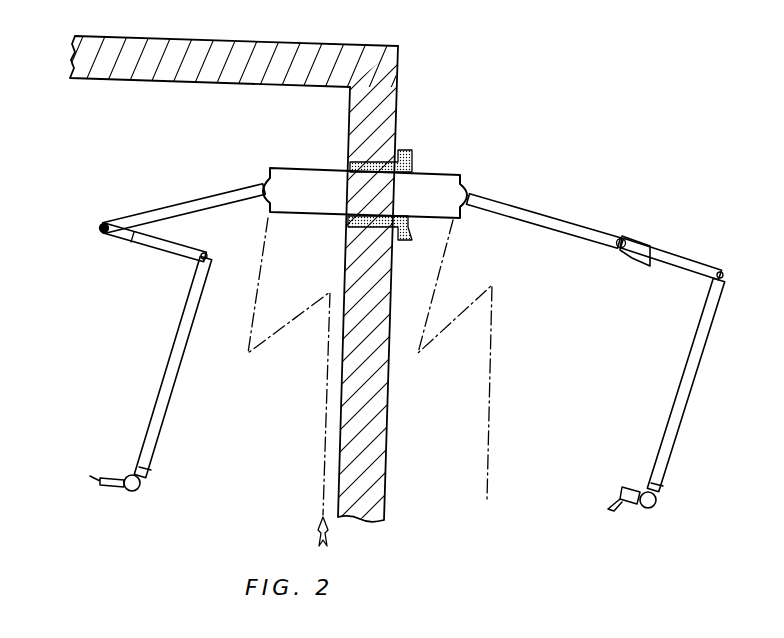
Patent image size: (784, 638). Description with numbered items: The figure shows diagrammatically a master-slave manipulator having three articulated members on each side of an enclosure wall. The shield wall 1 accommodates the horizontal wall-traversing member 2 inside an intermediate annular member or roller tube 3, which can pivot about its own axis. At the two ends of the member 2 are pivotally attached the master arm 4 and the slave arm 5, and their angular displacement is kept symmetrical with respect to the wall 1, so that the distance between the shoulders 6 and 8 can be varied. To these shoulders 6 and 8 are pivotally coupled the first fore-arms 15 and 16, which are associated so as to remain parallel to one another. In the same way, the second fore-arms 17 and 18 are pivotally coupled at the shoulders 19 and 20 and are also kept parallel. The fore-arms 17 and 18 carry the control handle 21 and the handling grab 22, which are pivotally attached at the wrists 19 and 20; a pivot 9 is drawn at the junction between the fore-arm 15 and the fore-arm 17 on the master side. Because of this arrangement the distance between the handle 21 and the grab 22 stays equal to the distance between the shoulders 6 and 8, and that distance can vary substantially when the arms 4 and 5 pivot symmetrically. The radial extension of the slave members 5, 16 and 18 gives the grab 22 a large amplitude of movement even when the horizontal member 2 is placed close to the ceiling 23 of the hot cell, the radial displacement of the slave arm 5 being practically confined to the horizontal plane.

The shield wall 1 is at (394, 104).
The horizontal wall-traversing member 2 is at (440, 180).
The intermediate annular member or roller tube 3 is at (407, 158).
The master arm 4 is at (530, 214).
The slave arm 5 is at (212, 207).
The shoulder 6 is at (626, 240).
The shoulder 8 is at (106, 222).
The pivot 9 is at (726, 277).
The first fore-arm 15 is at (684, 263).
The first fore-arm 16 is at (170, 260).
The second fore-arm 17 is at (690, 390).
The second fore-arm 18 is at (175, 383).
The shoulder / wrist 19 is at (656, 503).
The shoulder / wrist 20 is at (212, 257).
The control handle 21 is at (630, 512).
The handling grab 22 is at (95, 485).
The ceiling 23 is at (243, 78).